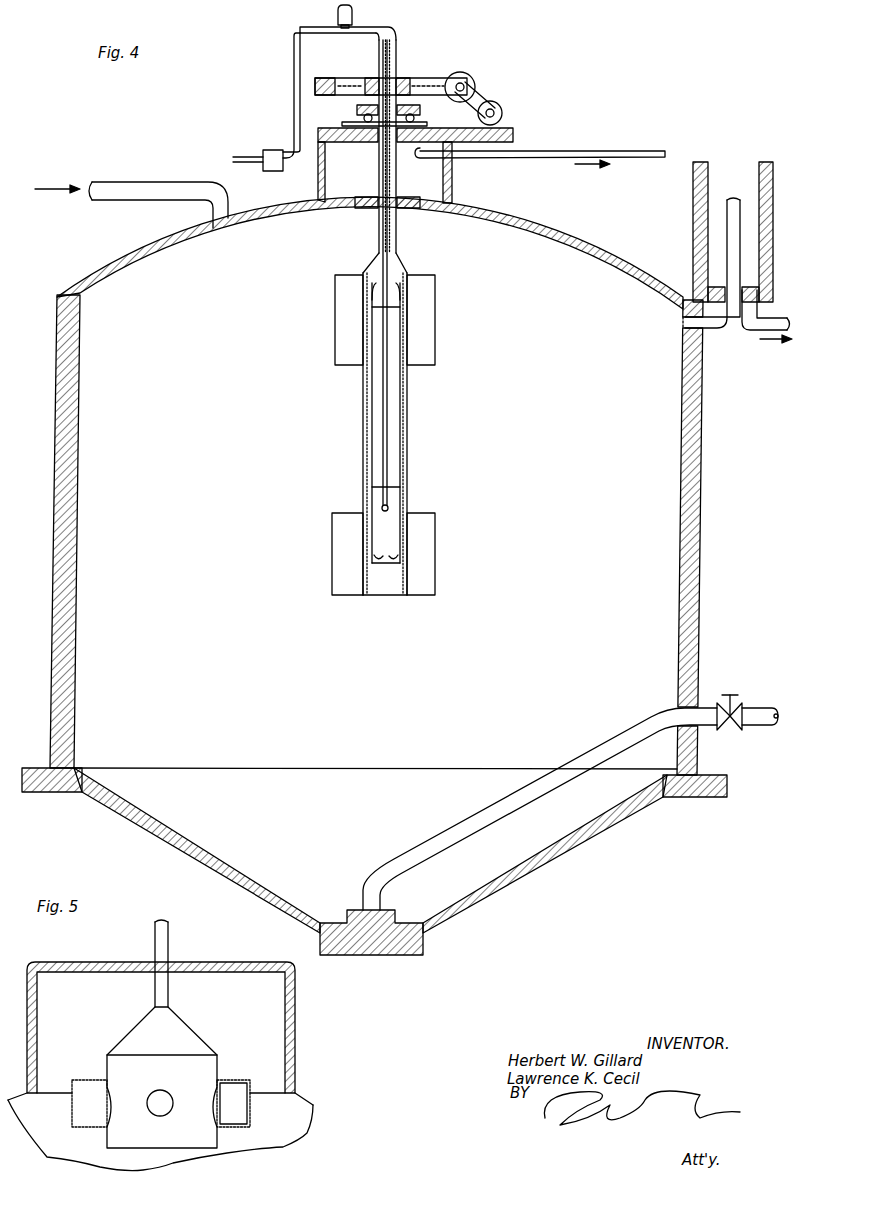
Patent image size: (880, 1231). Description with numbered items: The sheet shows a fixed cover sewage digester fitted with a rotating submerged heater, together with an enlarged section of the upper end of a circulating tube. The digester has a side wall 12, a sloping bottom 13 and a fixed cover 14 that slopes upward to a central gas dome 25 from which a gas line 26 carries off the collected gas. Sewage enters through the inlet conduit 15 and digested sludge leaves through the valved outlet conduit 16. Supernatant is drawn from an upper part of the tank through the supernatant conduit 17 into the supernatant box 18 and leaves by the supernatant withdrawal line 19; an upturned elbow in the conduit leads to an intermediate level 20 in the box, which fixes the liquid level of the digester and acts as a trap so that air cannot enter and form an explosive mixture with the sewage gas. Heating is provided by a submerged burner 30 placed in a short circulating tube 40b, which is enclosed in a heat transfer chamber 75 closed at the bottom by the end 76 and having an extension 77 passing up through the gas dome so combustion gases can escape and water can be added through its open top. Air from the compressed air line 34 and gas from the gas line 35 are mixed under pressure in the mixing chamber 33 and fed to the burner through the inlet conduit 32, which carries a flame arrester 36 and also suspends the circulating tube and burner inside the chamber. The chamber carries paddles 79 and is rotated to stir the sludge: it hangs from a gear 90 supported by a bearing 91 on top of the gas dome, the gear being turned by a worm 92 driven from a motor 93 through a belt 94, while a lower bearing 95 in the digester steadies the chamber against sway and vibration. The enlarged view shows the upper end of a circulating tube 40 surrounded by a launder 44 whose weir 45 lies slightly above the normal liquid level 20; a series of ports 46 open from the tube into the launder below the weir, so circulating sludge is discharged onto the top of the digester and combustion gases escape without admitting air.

In FIG. 4, the side wall 12 is at (703, 421).
In FIG. 4, the sloping bottom 13 is at (580, 840).
In FIG. 4, the fixed cover 14 is at (585, 230).
In FIG. 4, the inlet conduit 15 is at (155, 193).
In FIG. 4, the valved outlet conduit 16 is at (600, 747).
In FIG. 4, the supernatant conduit 17 is at (685, 331).
In FIG. 4, the supernatant box 18 is at (773, 256).
In FIG. 4, the supernatant withdrawal line 19 is at (765, 329).
In FIG. 4, the intermediate level 20 is at (735, 200).
In FIG. 5, the intermediate level 20 is at (57, 1092).
In FIG. 4, the gas dome 25 is at (452, 181).
In FIG. 5, the gas dome 25 is at (228, 970).
In FIG. 4, the gas line 26 is at (598, 152).
In FIG. 4, the submerged burner 30 is at (388, 506).
In FIG. 4, the inlet conduit 32 is at (387, 265).
In FIG. 4, the mixing chamber 33 is at (270, 150).
In FIG. 4, the compressed air line 34 is at (240, 163).
In FIG. 4, the gas line 35 is at (238, 156).
In FIG. 4, the flame arrester 36 is at (337, 13).
In FIG. 4, the short circulating tube 40b is at (401, 397).
In FIG. 4, the heat transfer chamber 75 is at (363, 404).
In FIG. 4, the end 76 is at (387, 597).
In FIG. 4, the extension 77 is at (397, 60).
In FIG. 4, the paddles 79 is at (335, 322).
In FIG. 4, the gear 90 is at (400, 79).
In FIG. 4, the bearing 91 is at (360, 118).
In FIG. 4, the worm 92 is at (466, 85).
In FIG. 4, the motor 93 is at (503, 112).
In FIG. 4, the belt 94 is at (485, 97).
In FIG. 4, the bearing 95 is at (375, 209).
In FIG. 5, the circulating tube 40 is at (217, 1072).
In FIG. 5, the launder 44 is at (233, 1110).
In FIG. 5, the weir 45 is at (250, 1085).
In FIG. 5, the ports 46 is at (158, 1092).